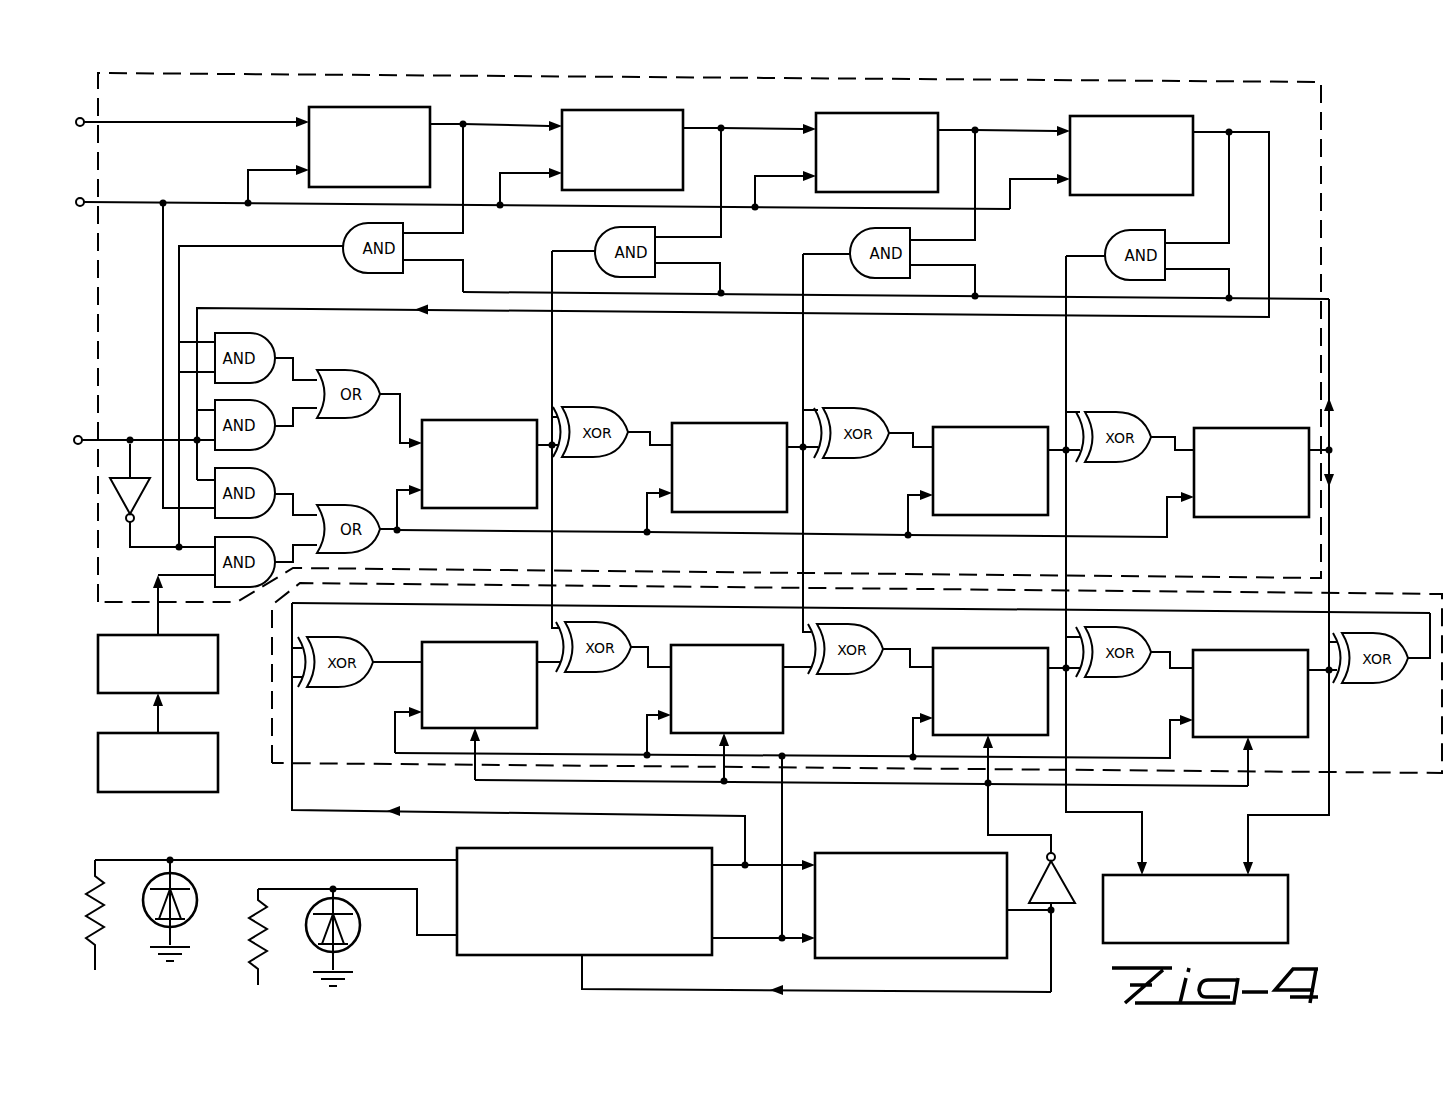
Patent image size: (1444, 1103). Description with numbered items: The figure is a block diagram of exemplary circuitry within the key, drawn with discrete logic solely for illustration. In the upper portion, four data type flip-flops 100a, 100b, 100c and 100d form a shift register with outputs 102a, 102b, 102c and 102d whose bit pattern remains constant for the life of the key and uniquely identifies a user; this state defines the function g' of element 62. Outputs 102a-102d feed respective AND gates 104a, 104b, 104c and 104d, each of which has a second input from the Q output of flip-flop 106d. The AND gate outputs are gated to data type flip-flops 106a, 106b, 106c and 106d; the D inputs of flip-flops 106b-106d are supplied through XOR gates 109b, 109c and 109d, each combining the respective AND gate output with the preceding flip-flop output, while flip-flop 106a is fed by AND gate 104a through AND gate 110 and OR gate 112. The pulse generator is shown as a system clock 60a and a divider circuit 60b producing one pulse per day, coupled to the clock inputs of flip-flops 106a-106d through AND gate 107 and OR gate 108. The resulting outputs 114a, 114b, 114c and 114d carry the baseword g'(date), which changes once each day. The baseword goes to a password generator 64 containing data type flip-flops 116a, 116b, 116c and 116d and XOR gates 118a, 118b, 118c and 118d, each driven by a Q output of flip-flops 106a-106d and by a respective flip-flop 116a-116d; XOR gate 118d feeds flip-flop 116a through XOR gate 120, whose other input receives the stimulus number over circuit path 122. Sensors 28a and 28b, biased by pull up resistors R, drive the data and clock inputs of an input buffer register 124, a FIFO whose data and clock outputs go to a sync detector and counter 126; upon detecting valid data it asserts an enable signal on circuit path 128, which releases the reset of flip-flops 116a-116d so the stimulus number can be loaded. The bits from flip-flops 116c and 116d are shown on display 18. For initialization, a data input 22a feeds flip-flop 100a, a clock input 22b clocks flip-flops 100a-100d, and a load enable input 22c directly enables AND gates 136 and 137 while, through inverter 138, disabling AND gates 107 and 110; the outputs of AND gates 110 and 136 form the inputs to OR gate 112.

The data input 22a is at (86, 128).
The clock input 22b is at (86, 208).
The load enable input 22c is at (84, 446).
The data type flip-flop 100a is at (435, 147).
The data type flip-flop 100b is at (689, 150).
The data type flip-flop 100c is at (943, 152).
The data type flip-flop 100d is at (733, 298).
The output 102a is at (452, 246).
The output 102b is at (708, 244).
The output 102c is at (962, 246).
The output 102d is at (1229, 216).
The AND gate 104a is at (343, 237).
The AND gate 104b is at (595, 234).
The AND gate 104c is at (850, 238).
The AND gate 104d is at (1112, 234).
The data type flip-flop 106a is at (490, 464).
The data type flip-flop 106b is at (745, 467).
The data type flip-flop 106c is at (1006, 471).
The data type flip-flop 106d is at (1261, 472).
The XOR gate 109b is at (592, 418).
The XOR gate 109c is at (854, 415).
The XOR gate 109d is at (1100, 420).
The AND gate 110 is at (282, 328).
The OR gate 112 is at (368, 374).
The AND gate 136 is at (277, 441).
The AND gate 137 is at (262, 470).
The inverter 138 is at (147, 492).
The AND gate 107 is at (212, 561).
The OR gate 108 is at (378, 542).
The output 114a is at (552, 557).
The output 114b is at (803, 558).
The output 114c is at (1066, 563).
The output 114d is at (1329, 534).
The data type flip-flop 116a is at (491, 685).
The data type flip-flop 116b is at (741, 689).
The data type flip-flop 116c is at (1006, 691).
The data type flip-flop 116d is at (1265, 693).
The XOR gate 118a is at (621, 646).
The XOR gate 118b is at (892, 648).
The XOR gate 118c is at (1136, 648).
The XOR gate 118d is at (1418, 668).
The XOR gate 120 is at (334, 644).
The circuit path 122 is at (360, 812).
The input buffer register 124 is at (556, 958).
The sync detector and counter 126 is at (852, 853).
The circuit path 128 is at (712, 990).
The system clock 60a is at (98, 792).
The divider circuit 60b is at (96, 697).
The function g' element 62 is at (1322, 172).
The password generator 64 is at (1345, 594).
The display 18 is at (1187, 875).
The sensor 28a is at (190, 890).
The sensor 28b is at (362, 955).